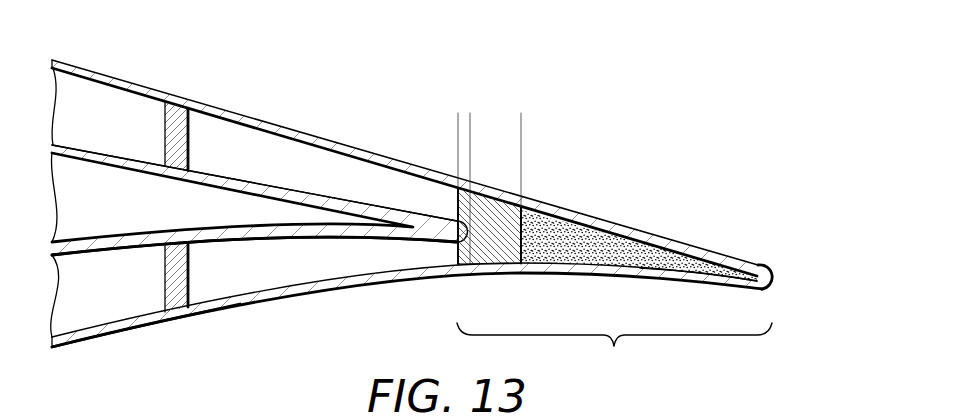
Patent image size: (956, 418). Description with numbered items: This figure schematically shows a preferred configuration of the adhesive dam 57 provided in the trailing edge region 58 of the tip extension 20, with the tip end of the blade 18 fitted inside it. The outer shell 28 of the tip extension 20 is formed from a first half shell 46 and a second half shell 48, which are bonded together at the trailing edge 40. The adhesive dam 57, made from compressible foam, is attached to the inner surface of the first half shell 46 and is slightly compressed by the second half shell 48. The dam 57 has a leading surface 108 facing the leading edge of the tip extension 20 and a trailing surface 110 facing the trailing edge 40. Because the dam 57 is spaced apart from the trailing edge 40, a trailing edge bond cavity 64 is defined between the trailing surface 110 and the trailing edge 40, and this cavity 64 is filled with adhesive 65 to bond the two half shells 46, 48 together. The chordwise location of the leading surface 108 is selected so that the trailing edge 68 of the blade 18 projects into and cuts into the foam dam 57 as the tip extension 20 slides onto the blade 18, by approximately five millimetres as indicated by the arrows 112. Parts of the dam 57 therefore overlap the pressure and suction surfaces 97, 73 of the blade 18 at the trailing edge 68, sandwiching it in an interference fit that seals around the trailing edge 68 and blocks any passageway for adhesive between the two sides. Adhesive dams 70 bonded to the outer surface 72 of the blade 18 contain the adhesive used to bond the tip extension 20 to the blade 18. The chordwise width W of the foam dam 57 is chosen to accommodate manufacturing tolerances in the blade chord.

The tip extension 20 is at (148, 54).
The blade 18 is at (95, 240).
The outer shell 28 is at (86, 334).
The trailing edge 40 is at (772, 283).
The first half shell 46 is at (288, 289).
The second half shell 48 is at (309, 141).
The adhesive dam 57 is at (493, 205).
The trailing edge region 58 is at (614, 347).
The trailing edge bond cavity 64 is at (684, 260).
The adhesive 65 is at (711, 269).
The trailing edge of the blade 68 is at (477, 241).
The adhesive dams 70 is at (176, 112).
The outer surface of the blade 72 is at (230, 170).
The suction side 73 is at (101, 144).
The pressure side 97 is at (132, 256).
The leading surface 108 is at (450, 194).
The trailing surface 110 is at (528, 216).
The arrows 112 is at (471, 118).
The chordwise width W is at (471, 135).